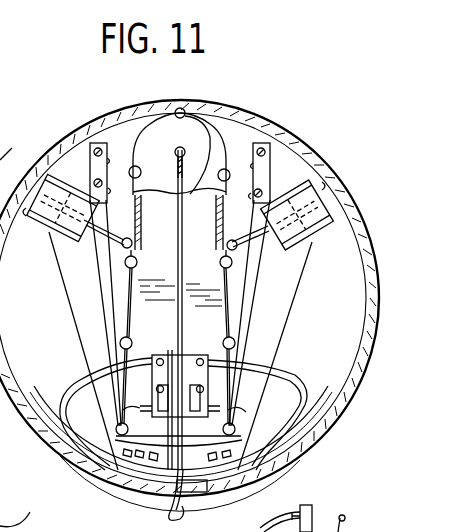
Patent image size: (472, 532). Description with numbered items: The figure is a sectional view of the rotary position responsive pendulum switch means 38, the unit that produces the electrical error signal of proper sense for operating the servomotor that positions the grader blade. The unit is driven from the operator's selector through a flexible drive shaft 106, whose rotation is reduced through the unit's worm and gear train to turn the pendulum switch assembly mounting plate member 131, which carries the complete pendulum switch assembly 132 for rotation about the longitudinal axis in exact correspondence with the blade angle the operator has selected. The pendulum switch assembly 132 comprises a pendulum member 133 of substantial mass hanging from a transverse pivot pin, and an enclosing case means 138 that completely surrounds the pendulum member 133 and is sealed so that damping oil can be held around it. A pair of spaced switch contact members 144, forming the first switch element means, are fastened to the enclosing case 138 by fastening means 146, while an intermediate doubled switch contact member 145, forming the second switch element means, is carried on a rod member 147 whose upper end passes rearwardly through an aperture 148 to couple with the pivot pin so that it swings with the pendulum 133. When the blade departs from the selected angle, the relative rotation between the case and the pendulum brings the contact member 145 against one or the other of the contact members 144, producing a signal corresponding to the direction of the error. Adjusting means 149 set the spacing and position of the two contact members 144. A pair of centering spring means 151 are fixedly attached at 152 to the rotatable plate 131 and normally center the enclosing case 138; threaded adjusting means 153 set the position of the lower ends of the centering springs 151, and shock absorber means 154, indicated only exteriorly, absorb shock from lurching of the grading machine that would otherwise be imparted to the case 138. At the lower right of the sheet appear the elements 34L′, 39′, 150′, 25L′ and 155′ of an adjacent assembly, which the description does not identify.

The rotary position responsive pendulum switch means 38 is at (284, 125).
The flexible drive shaft 106 is at (23, 145).
The fixed attachment of centering springs 152 is at (92, 158).
The centering spring means 151 is at (110, 328).
The shock absorber means 154 is at (40, 250).
The pendulum switch assembly mounting plate member 131 is at (62, 274).
The enclosing case means 138 is at (240, 316).
The pendulum member 133 is at (162, 232).
The aperture 148 is at (190, 140).
The rod member 147 is at (178, 334).
The fastening means 146 is at (221, 394).
The adjusting means 149 is at (123, 415).
The threaded adjusting means 153 is at (98, 463).
The switch contact members 144 is at (136, 490).
The doubled switch contact member 145 is at (176, 511).
The pendulum switch assembly 132 is at (166, 480).
The lead 34L′ is at (24, 510).
The post 39′ is at (312, 502).
The connector 150′ is at (320, 508).
The lead 25L′ is at (344, 516).
The pin 155′ is at (364, 520).